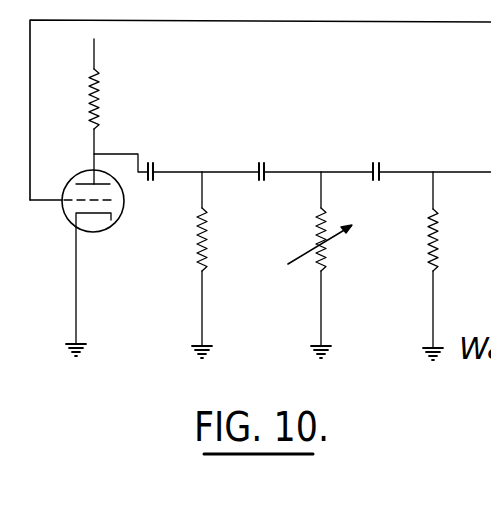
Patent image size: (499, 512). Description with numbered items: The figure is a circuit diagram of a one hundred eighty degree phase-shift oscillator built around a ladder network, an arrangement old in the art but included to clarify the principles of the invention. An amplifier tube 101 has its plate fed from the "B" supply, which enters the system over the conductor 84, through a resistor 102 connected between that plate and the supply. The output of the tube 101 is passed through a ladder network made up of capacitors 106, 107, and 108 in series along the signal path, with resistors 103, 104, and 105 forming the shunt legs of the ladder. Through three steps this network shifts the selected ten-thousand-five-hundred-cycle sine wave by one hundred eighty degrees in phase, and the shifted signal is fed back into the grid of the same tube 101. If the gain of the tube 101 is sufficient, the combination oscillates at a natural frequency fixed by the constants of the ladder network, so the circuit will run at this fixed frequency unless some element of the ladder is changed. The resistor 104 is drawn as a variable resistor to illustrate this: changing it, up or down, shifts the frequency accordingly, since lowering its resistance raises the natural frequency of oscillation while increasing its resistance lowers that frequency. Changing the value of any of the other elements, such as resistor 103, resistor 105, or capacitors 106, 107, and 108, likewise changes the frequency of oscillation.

The conductor 84 is at (92, 58).
The tube 101 is at (114, 219).
The resistor 102 is at (98, 96).
The resistor 103 is at (197, 235).
The variable resistor 104 is at (312, 235).
The resistor 105 is at (428, 235).
The capacitor 106 is at (154, 163).
The capacitor 107 is at (263, 164).
The capacitor 108 is at (379, 165).